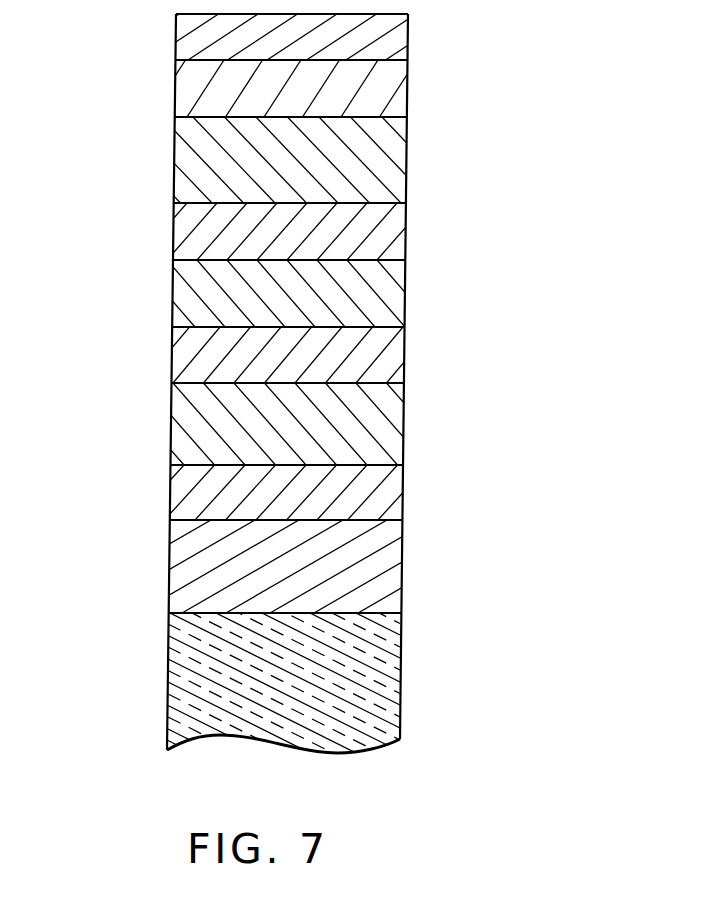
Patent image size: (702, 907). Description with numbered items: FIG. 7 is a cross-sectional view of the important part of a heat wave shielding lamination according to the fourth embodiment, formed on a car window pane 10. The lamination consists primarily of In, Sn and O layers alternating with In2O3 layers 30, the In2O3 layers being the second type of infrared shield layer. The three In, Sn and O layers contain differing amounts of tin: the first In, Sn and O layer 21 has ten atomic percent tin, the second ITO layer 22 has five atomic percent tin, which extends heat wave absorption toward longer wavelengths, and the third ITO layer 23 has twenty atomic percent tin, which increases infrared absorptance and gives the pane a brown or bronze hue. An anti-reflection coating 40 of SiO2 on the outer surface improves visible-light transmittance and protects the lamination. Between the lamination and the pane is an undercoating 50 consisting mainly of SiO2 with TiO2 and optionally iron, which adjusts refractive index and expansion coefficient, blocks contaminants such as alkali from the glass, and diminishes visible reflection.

The anti-reflection coating 40 is at (408, 45).
The In2O3 layer 30 is at (176, 85).
The first In, Sn and O layer 21 is at (407, 152).
The second ITO layer 22 is at (405, 296).
The third ITO layer 23 is at (405, 428).
The undercoating 50 is at (403, 553).
The car window pane 10 is at (401, 657).